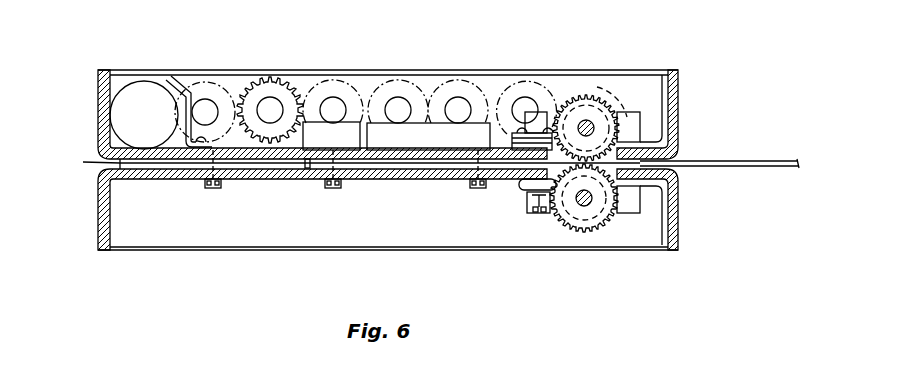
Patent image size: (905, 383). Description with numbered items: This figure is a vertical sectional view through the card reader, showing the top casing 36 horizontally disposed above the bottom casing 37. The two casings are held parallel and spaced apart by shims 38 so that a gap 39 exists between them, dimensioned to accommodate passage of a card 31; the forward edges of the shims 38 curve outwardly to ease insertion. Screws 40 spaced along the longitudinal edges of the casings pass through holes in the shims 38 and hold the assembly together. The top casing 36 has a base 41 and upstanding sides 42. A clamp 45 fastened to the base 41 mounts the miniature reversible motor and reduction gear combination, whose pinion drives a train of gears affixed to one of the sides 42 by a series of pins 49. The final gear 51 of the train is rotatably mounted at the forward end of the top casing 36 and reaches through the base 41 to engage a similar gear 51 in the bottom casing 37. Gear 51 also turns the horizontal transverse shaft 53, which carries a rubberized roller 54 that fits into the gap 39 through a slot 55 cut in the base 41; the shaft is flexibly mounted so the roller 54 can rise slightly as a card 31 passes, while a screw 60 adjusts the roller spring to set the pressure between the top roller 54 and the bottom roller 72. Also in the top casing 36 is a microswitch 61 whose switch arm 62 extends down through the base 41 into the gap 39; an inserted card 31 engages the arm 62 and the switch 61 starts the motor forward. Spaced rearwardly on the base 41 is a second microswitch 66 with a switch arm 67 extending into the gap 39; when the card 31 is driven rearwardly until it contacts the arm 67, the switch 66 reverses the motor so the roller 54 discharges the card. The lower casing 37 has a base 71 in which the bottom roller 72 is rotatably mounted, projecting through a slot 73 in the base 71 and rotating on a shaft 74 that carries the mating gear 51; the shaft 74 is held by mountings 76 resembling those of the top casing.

The card 31 is at (725, 161).
The top casing 36 is at (338, 64).
The bottom casing 37 is at (203, 258).
The shim 38 is at (86, 159).
The gap 39 is at (670, 161).
The screw 40 is at (219, 189).
The base 41 is at (183, 150).
The upstanding side 42 is at (237, 78).
The clamp 45 is at (177, 84).
The pin 49 is at (335, 107).
The final gear 51 is at (606, 90).
The horizontal transverse shaft 53 is at (583, 122).
The rubberized roller 54 is at (591, 95).
The slot 55 is at (604, 114).
The screw 60 is at (549, 232).
The microswitch 61 is at (538, 116).
The switch arm 62 is at (608, 192).
The second microswitch 66 is at (331, 136).
The switch arm 67 is at (309, 179).
The base 71 is at (395, 152).
The bottom roller 72 is at (606, 226).
The slot 73 is at (525, 184).
The shaft 74 is at (585, 207).
The mounting 76 is at (533, 213).